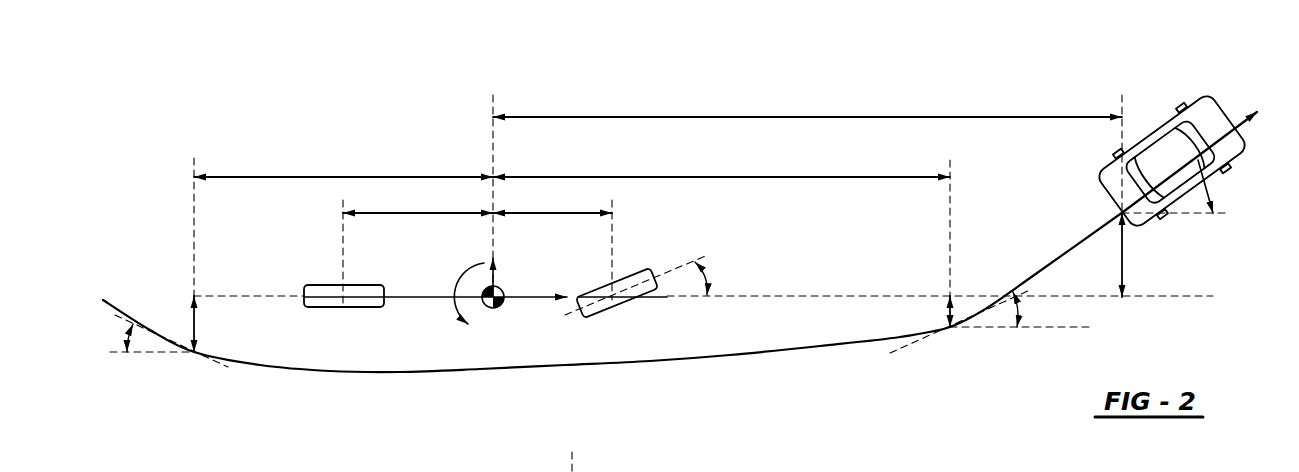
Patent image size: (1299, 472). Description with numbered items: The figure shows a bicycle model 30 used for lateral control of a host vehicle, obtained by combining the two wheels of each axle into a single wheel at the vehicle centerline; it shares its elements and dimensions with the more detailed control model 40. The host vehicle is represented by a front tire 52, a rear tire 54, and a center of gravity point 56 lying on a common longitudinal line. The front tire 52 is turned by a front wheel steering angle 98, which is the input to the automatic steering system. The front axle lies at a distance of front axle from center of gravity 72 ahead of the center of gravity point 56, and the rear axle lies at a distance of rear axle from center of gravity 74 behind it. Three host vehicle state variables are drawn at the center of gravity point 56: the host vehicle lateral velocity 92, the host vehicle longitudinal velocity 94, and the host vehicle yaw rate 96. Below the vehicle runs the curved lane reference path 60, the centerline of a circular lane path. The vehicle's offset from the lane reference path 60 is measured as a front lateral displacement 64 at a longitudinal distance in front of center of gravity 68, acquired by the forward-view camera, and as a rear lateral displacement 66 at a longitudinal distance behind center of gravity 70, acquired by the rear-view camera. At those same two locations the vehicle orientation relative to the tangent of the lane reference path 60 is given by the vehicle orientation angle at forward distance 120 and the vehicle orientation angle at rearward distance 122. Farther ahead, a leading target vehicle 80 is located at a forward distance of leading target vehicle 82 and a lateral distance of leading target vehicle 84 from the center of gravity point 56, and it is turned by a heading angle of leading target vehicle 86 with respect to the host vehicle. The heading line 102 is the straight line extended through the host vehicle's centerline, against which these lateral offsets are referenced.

The bicycle model 30 is at (192, 112).
The control model 40 is at (188, 471).
The front tire 52 is at (613, 308).
The rear tire 54 is at (352, 308).
The center of gravity point 56 is at (502, 304).
The lane reference path 60 is at (773, 355).
The front lateral displacement 64 is at (945, 312).
The rear lateral displacement 66 is at (200, 320).
The longitudinal distance in front of center of gravity 68 is at (688, 176).
The longitudinal distance behind center of gravity 70 is at (298, 177).
The distance of front axle from center of gravity 72 is at (525, 213).
The distance of rear axle from center of gravity 74 is at (447, 211).
The leading target vehicle 80 is at (1227, 108).
The forward distance of leading target vehicle 82 is at (690, 116).
The lateral distance of leading target vehicle 84 is at (1123, 258).
The heading angle of leading target vehicle 86 is at (1210, 195).
The host vehicle lateral velocity 92 is at (506, 270).
The host vehicle longitudinal velocity 94 is at (485, 280).
The host vehicle yaw rate 96 is at (461, 290).
The front wheel steering angle 98 is at (705, 273).
The heading line 102 is at (1187, 297).
The vehicle orientation angle at forward distance 120 is at (1020, 316).
The vehicle orientation angle at rearward distance 122 is at (125, 335).